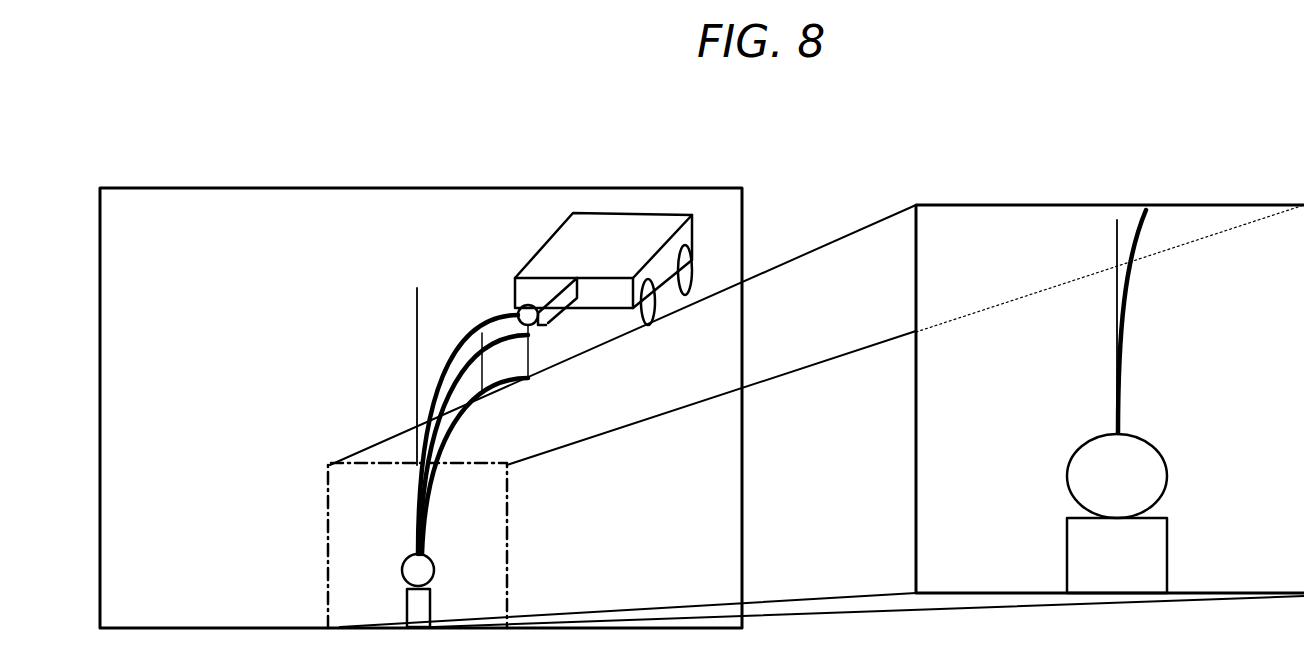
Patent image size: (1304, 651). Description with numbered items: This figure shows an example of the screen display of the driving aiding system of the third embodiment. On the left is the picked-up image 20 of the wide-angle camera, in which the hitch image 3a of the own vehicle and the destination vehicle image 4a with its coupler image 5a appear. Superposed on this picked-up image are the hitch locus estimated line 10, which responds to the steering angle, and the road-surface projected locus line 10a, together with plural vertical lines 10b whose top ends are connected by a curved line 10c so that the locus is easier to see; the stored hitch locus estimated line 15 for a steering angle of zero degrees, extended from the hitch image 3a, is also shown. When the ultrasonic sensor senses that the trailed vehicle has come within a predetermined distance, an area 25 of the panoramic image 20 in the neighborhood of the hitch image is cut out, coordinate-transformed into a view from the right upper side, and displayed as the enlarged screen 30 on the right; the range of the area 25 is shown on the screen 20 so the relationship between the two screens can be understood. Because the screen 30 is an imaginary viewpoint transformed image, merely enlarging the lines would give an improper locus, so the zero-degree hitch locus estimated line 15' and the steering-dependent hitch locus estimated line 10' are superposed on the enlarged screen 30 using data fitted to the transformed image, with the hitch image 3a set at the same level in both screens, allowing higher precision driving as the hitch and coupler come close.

The picked-up image (screen) 20 is at (297, 188).
The enlarged screen 30 is at (928, 205).
The area 25 is at (328, 532).
The hitch locus estimated line at steering angle of zero degree 15 is at (378, 368).
The hitch locus estimated line at steering angle of zero degree (enlarged screen) 15' is at (1079, 326).
The destination vehicle image 4a is at (557, 253).
The coupler image 5a is at (518, 306).
The hitch locus estimated line 10 is at (471, 454).
The road-surface projected locus line 10a is at (498, 385).
The vertical lines 10b is at (530, 357).
The curved line 10c is at (447, 371).
The hitch locus estimated line on enlarged screen 10' is at (1155, 321).
The hitch image 3a is at (414, 568).